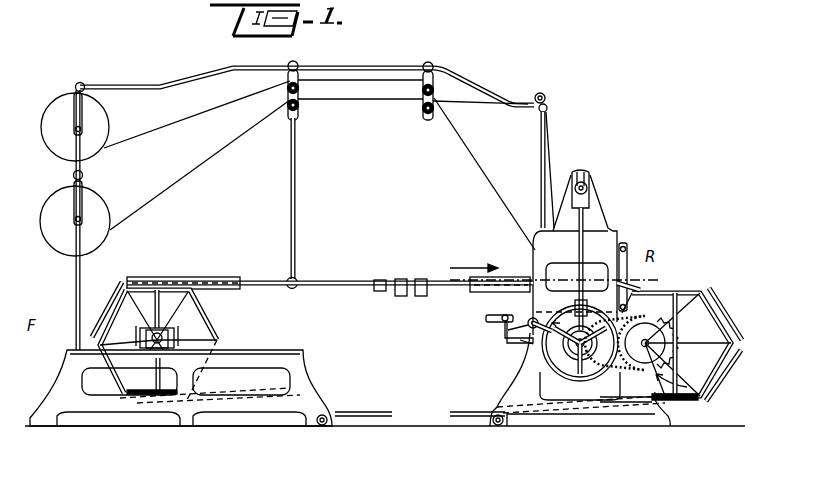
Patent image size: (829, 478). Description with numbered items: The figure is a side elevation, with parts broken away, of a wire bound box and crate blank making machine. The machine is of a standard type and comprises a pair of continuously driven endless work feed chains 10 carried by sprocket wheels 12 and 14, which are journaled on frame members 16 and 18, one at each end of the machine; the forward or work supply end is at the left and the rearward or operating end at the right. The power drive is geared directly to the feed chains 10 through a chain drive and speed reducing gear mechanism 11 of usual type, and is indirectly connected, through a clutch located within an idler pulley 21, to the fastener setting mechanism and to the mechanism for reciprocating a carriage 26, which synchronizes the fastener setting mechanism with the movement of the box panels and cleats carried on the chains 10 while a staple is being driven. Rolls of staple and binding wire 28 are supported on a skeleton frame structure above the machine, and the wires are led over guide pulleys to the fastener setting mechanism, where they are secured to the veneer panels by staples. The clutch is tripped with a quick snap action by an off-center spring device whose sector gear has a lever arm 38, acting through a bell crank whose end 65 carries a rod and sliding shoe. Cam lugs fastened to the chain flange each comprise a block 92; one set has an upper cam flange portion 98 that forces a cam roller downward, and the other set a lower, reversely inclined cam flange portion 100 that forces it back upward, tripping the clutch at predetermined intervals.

The endless work feed chains 10 is at (218, 280).
The chain drive and speed reducing gear mechanism 11 is at (705, 392).
The sprocket wheel 12 is at (212, 331).
The sprocket wheel 14 is at (700, 333).
The frame member 16 is at (280, 350).
The frame member 18 is at (668, 416).
The idler pulley 21 is at (522, 350).
The carriage 26 is at (606, 222).
The rolls of staple and binding wire 28 is at (104, 126).
The lever arm 38 is at (489, 316).
The end of bell crank 65 is at (546, 318).
The block 92 is at (378, 291).
The cam flange portion 98 is at (382, 282).
The cam flange portion 100 is at (421, 296).